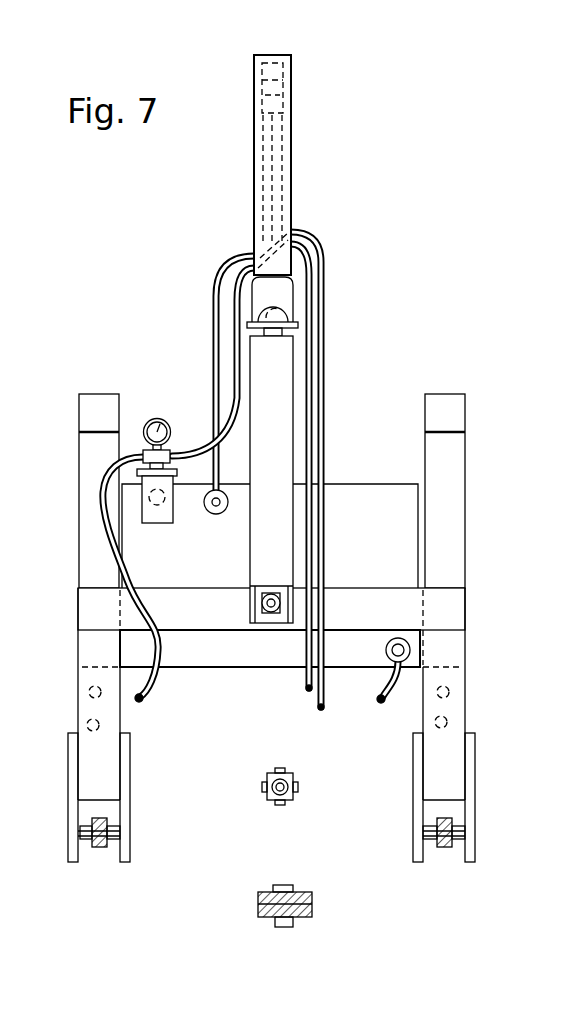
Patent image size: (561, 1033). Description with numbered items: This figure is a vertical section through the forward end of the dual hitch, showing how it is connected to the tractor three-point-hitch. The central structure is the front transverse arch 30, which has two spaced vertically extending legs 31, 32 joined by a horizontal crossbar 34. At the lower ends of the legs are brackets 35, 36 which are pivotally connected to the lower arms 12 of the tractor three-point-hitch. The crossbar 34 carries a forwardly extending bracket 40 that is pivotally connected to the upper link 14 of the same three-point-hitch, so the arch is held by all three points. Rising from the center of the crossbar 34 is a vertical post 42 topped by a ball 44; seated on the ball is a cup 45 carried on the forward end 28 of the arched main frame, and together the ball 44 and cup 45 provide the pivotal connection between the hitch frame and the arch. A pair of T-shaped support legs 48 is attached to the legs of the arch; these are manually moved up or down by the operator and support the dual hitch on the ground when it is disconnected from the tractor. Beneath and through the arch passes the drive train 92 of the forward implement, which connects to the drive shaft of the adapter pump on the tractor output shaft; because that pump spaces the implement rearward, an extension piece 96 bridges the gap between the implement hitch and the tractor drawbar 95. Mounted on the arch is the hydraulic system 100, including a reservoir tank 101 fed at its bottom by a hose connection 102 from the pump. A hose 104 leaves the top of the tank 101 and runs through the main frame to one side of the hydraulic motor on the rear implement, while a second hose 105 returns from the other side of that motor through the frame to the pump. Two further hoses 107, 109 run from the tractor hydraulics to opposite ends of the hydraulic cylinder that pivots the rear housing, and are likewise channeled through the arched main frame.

The lower arms 12 is at (105, 848).
The upper link 14 is at (263, 622).
The forward end 28 is at (288, 163).
The front transverse arch 30 is at (478, 568).
The leg 31 is at (463, 637).
The leg 32 is at (78, 640).
The horizontal crossbar 34 is at (353, 598).
The bracket 35 is at (413, 812).
The bracket 36 is at (130, 812).
The forwardly extending bracket 40 is at (250, 604).
The vertical post 42 is at (273, 378).
The ball 44 is at (297, 298).
The cup 45 is at (263, 308).
The T-shaped support legs 48 is at (102, 398).
The drive train 92 is at (272, 773).
The drawbar 95 is at (258, 912).
The extension piece 96 is at (297, 890).
The hydraulic system 100 is at (155, 393).
The reservoir tank 101 is at (365, 490).
The hose connection 102 is at (378, 706).
The hose 104 is at (212, 368).
The second hose 105 is at (163, 680).
The hose 107 is at (325, 497).
The second hose 109 is at (310, 396).